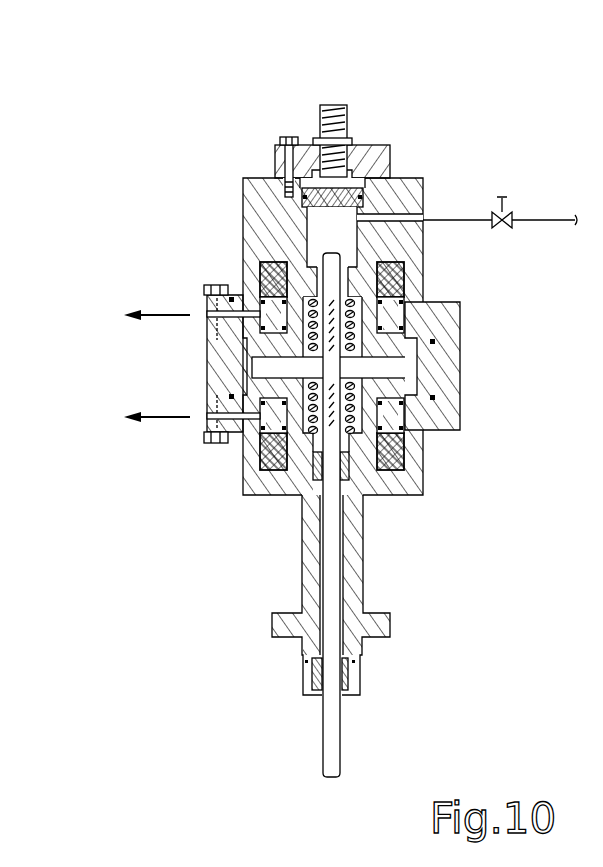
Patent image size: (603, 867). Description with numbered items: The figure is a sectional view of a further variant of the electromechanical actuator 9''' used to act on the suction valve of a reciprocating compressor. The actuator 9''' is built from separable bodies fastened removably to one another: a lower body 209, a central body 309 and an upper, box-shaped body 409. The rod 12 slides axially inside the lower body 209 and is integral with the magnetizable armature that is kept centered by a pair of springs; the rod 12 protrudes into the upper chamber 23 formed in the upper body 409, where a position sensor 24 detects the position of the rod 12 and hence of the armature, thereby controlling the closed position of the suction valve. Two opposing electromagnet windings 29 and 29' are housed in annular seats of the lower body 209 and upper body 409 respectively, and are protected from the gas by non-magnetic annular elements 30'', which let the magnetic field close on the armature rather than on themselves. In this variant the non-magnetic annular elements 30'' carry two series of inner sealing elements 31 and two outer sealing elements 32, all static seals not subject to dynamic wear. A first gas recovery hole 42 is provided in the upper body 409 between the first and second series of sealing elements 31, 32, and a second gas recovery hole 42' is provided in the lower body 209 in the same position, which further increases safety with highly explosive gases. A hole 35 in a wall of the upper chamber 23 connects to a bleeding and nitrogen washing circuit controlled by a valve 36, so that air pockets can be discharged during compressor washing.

The rod 12 is at (333, 743).
The upper chamber 23 is at (320, 225).
The position sensor 24 is at (323, 112).
The winding 29 is at (292, 578).
The winding 29' is at (413, 142).
The non-magnetic annular elements 30'' is at (350, 352).
The inner sealing element 31 is at (386, 315).
The outer sealing element 32 is at (232, 298).
The hole 35 is at (393, 217).
The valve 36 is at (502, 212).
The first gas recovery hole 42 is at (185, 364).
The second gas recovery hole 42' is at (151, 450).
The lower body 209 is at (387, 490).
The central body 309 is at (450, 372).
The upper body 409 is at (418, 205).
The electromechanical actuator 9''' is at (499, 362).